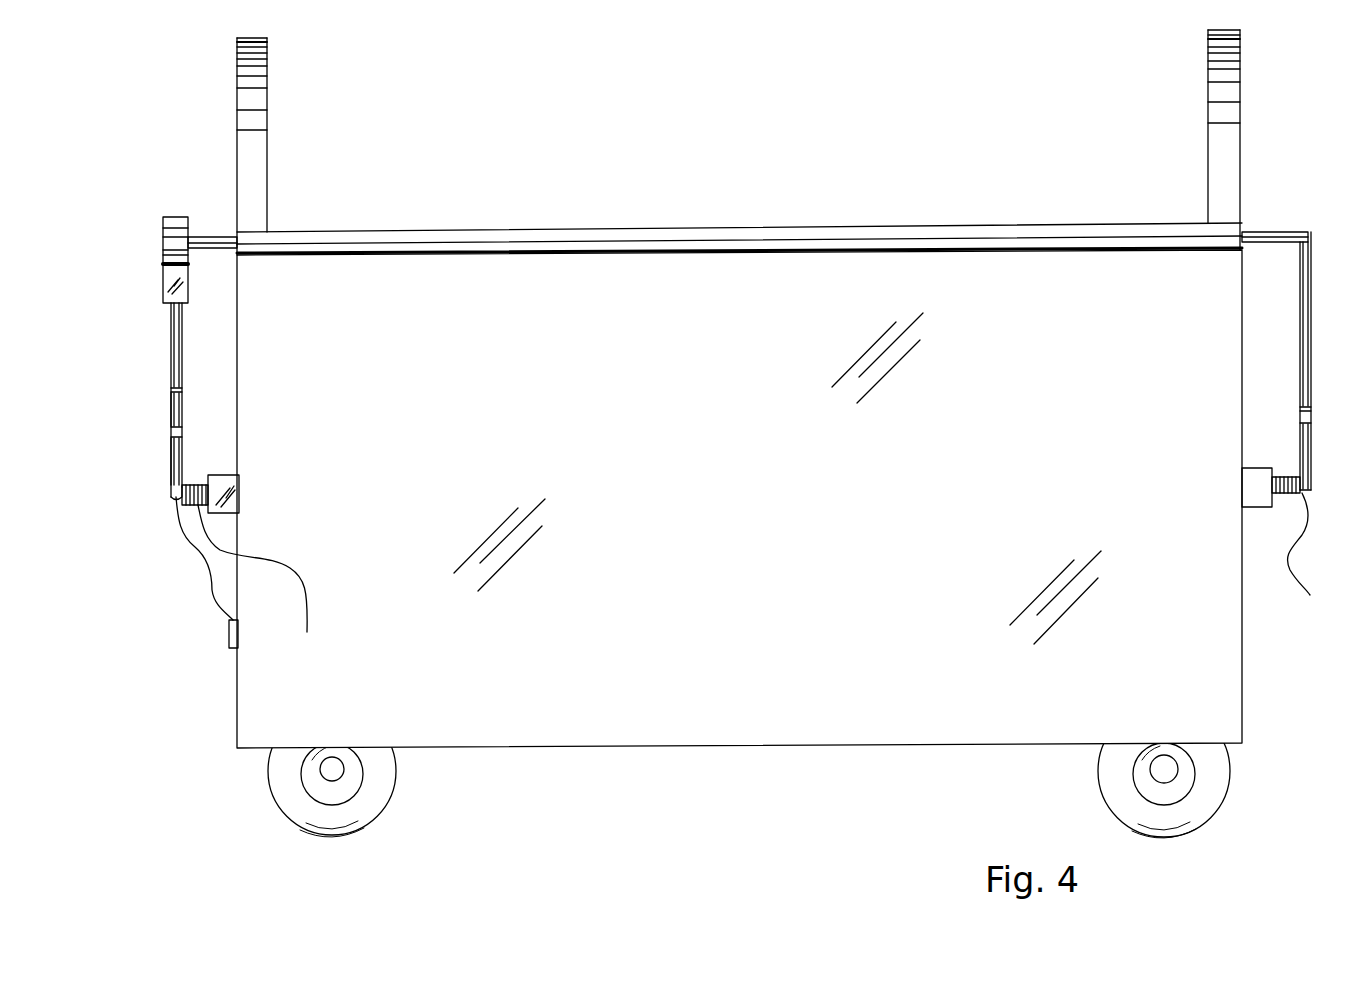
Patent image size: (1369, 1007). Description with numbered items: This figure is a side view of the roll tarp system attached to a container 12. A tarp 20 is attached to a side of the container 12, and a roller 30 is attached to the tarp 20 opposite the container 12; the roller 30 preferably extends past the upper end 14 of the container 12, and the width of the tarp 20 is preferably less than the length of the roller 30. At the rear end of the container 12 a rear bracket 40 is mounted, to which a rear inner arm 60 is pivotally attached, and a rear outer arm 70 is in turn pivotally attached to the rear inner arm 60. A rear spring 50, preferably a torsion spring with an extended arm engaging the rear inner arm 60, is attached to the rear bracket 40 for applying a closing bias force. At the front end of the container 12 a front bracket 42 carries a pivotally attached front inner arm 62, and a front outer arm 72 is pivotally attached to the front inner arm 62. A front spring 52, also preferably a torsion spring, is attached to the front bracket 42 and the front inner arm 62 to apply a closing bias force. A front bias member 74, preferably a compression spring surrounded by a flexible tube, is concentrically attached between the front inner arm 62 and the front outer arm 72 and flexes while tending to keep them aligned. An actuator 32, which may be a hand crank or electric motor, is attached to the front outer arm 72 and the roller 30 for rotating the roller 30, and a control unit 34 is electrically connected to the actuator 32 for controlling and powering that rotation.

The container 12 is at (917, 690).
The upper end 14 is at (252, 110).
The tarp 20 is at (700, 235).
The roller 30 is at (212, 237).
The actuator 32 is at (175, 240).
The control unit 34 is at (230, 643).
The rear bracket 40 is at (1252, 502).
The front bracket 42 is at (235, 510).
The rear spring 50 is at (1316, 565).
The front spring 52 is at (263, 591).
The rear inner arm 60 is at (1304, 445).
The front inner arm 62 is at (180, 457).
The rear outer arm 70 is at (1303, 330).
The front outer arm 72 is at (175, 348).
The front bias member 74 is at (175, 408).